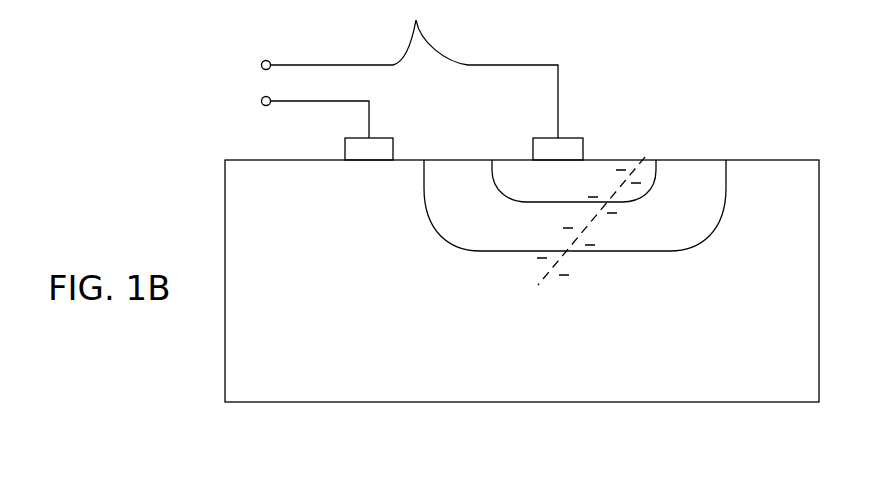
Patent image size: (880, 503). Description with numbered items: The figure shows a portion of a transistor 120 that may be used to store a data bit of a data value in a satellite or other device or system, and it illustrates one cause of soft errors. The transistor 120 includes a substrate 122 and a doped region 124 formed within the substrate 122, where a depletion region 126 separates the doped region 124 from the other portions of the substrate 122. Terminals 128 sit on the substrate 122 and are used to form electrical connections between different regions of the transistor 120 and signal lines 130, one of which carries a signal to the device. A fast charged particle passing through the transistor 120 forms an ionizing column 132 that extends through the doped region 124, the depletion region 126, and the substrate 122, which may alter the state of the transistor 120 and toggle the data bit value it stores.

The transistor 120 is at (718, 112).
The substrate 122 is at (521, 403).
The doped region 124 is at (511, 194).
The depletion region 126 is at (620, 251).
The terminals 128 is at (344, 152).
The signal lines 130 is at (317, 64).
The ionizing column 132 is at (642, 157).